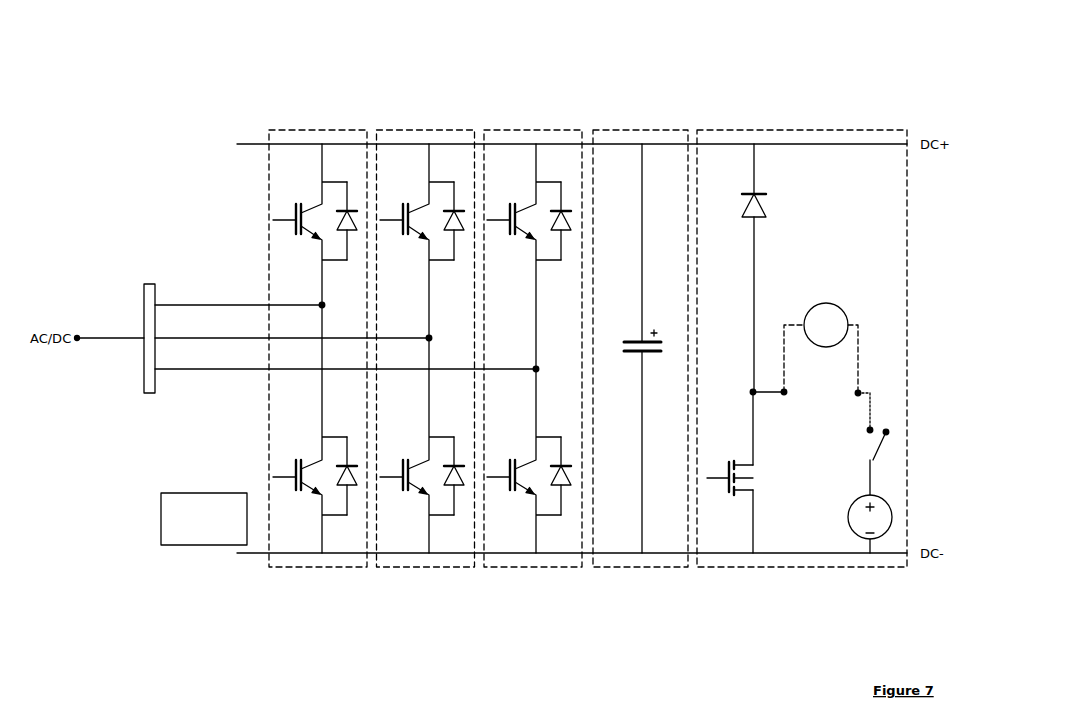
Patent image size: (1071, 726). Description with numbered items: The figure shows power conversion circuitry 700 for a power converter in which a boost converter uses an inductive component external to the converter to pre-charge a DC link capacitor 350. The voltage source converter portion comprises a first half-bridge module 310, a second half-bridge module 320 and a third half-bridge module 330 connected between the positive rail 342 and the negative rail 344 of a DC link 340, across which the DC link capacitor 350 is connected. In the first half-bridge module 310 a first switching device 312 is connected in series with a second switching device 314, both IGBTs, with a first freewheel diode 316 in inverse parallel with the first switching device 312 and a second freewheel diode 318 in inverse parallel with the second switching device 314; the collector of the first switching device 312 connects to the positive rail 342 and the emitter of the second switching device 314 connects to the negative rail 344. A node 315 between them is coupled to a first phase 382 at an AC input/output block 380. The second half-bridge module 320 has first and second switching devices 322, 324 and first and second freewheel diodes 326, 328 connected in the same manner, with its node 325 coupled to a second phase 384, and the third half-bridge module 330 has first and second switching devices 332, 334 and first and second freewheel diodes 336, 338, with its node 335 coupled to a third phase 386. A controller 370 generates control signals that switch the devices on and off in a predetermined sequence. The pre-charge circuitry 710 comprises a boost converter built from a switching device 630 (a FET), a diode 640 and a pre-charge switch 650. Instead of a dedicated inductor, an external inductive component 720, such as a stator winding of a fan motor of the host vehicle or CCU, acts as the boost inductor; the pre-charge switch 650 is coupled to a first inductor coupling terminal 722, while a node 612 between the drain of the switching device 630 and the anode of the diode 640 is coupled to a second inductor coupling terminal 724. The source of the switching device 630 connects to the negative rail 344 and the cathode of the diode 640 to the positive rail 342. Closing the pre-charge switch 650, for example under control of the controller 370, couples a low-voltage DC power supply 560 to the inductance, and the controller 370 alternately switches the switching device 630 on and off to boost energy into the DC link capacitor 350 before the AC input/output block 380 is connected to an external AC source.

The power conversion circuitry 700 is at (118, 89).
The first half-bridge module 310 is at (327, 130).
The second half-bridge module 320 is at (434, 130).
The third half-bridge module 330 is at (541, 130).
The DC link 340 is at (635, 130).
The pre-charge circuitry 710 is at (847, 130).
The first switching device 312 is at (297, 204).
The first freewheel diode 316 is at (348, 209).
The second switching device 314 is at (297, 460).
The second freewheel diode 318 is at (348, 466).
The node 315 is at (322, 304).
The first switching device 322 is at (404, 204).
The first freewheel diode 326 is at (455, 209).
The second switching device 324 is at (404, 460).
The second freewheel diode 328 is at (455, 466).
The node 325 is at (429, 337).
The first switching device 332 is at (511, 204).
The first freewheel diode 336 is at (562, 209).
The second switching device 334 is at (511, 460).
The second freewheel diode 338 is at (562, 466).
The node 335 is at (536, 368).
The positive rail 342 is at (672, 147).
The negative rail 344 is at (655, 552).
The DC link capacitor 350 is at (650, 354).
The controller 370 is at (204, 519).
The AC input/output block 380 is at (150, 284).
The first phase 382 is at (177, 304).
The second phase 384 is at (200, 337).
The third phase 386 is at (230, 368).
The diode 640 is at (757, 219).
The node 612 is at (753, 391).
The second inductor coupling terminal 724 is at (784, 395).
The external inductive component 720 is at (830, 305).
The first inductor coupling terminal 722 is at (858, 396).
The pre-charge switch 650 is at (872, 465).
The low-voltage DC power supply 560 is at (855, 512).
The switching device 630 is at (731, 496).